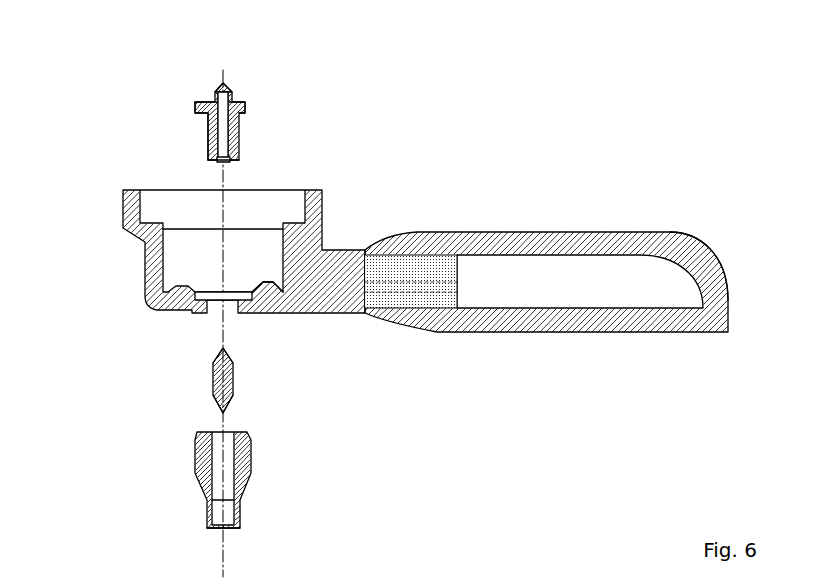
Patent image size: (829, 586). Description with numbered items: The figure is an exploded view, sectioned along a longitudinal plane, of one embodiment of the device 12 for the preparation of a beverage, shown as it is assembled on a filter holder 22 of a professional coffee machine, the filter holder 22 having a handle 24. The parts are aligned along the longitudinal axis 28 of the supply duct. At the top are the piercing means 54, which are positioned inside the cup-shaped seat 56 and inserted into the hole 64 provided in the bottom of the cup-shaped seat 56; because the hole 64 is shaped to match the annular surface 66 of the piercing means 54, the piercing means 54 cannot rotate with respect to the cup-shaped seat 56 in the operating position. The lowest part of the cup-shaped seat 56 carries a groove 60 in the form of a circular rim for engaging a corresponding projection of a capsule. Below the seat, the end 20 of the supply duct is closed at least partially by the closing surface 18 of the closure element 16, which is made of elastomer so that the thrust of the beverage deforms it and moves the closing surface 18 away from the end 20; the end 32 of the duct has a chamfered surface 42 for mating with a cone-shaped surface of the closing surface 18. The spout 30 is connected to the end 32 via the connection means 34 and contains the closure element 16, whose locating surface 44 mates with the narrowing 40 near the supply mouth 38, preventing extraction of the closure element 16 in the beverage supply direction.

The device for the preparation of a beverage 12 is at (162, 463).
The closure element 16 is at (232, 373).
The closing surface 18 is at (218, 355).
The end of the supply duct 20 is at (231, 178).
The filter holder 22 is at (556, 207).
The handle 24 is at (679, 242).
The longitudinal axis 28 is at (224, 77).
The spout 30 is at (252, 453).
The end of the supply duct 32 is at (208, 132).
The connection means 34 is at (245, 131).
The supply mouth 38 is at (230, 528).
The narrowing 40 is at (213, 502).
The chamfered surface 42 is at (210, 173).
The locating surface 44 is at (217, 397).
The piercing means 54 is at (202, 82).
The cup-shaped seat 56 is at (163, 273).
The groove 60 is at (275, 289).
The hole 64 is at (202, 296).
The annular surface 66 is at (195, 104).